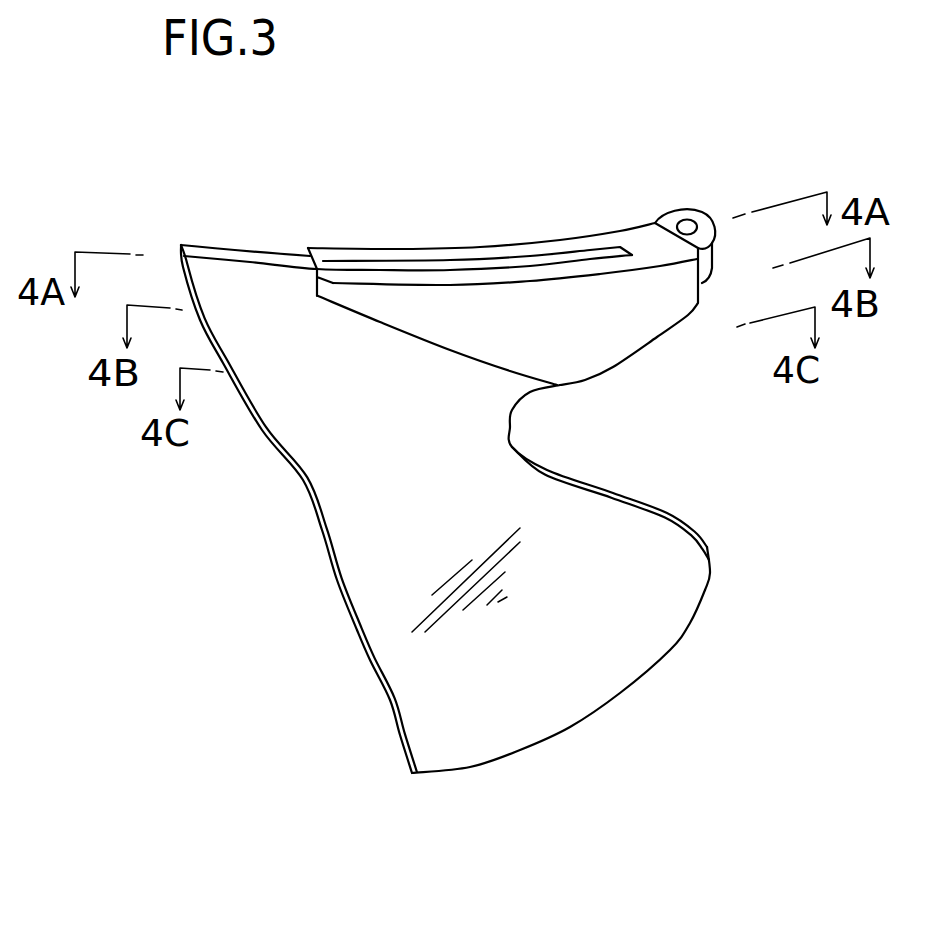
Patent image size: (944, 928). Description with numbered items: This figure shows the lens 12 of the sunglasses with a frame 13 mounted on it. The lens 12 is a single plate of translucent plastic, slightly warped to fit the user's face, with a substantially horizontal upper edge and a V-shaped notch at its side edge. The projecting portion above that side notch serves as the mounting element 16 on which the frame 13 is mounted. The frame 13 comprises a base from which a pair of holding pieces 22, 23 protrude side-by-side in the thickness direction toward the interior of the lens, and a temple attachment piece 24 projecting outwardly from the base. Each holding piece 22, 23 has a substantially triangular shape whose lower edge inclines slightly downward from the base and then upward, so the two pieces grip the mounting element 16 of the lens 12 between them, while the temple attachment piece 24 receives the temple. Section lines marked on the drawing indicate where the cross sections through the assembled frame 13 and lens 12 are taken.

The lens 12 is at (653, 613).
The frame 13 is at (623, 227).
The mounting element 16 is at (513, 268).
The holding piece 22 is at (422, 247).
The holding piece 23 is at (611, 340).
The temple attachment piece 24 is at (690, 210).